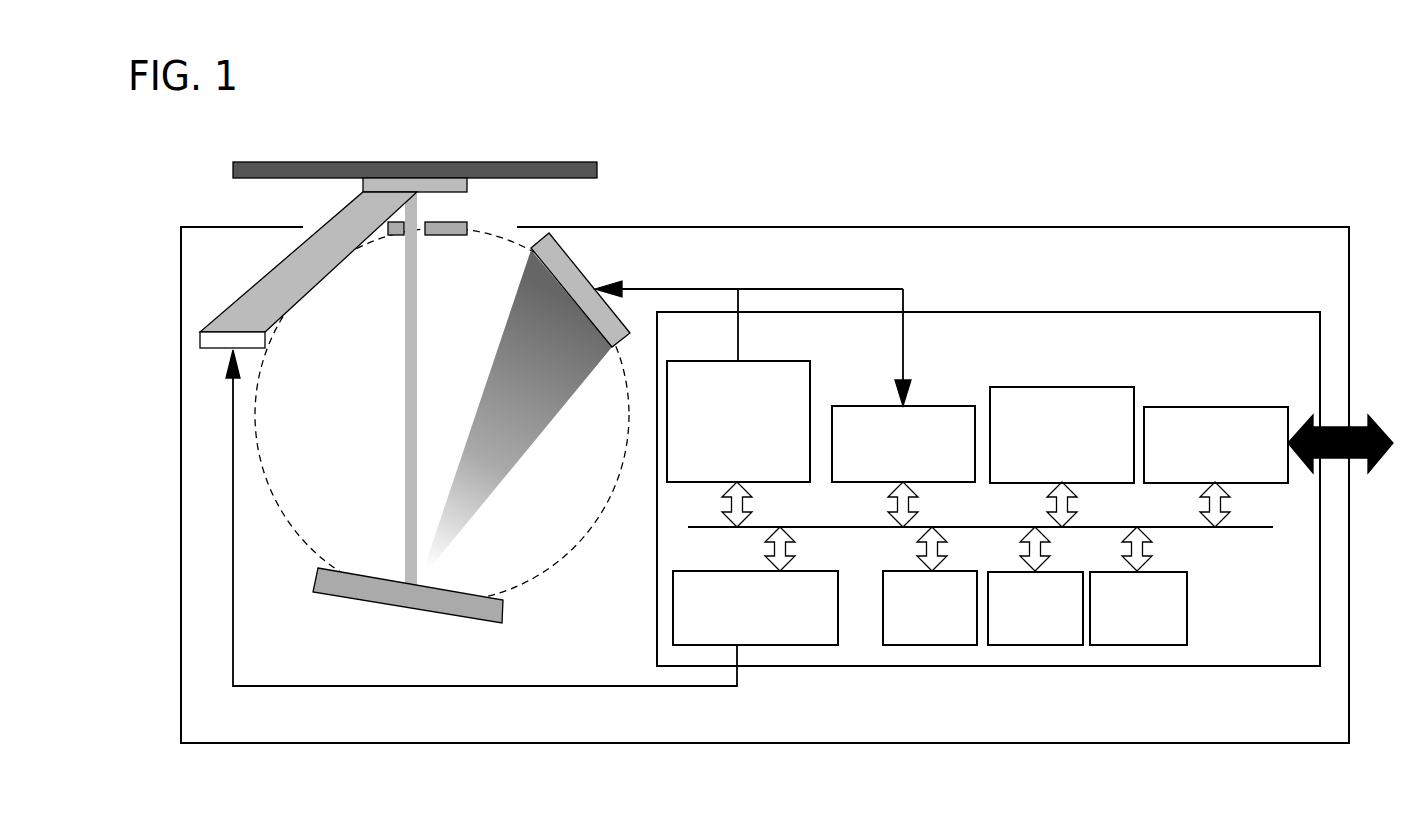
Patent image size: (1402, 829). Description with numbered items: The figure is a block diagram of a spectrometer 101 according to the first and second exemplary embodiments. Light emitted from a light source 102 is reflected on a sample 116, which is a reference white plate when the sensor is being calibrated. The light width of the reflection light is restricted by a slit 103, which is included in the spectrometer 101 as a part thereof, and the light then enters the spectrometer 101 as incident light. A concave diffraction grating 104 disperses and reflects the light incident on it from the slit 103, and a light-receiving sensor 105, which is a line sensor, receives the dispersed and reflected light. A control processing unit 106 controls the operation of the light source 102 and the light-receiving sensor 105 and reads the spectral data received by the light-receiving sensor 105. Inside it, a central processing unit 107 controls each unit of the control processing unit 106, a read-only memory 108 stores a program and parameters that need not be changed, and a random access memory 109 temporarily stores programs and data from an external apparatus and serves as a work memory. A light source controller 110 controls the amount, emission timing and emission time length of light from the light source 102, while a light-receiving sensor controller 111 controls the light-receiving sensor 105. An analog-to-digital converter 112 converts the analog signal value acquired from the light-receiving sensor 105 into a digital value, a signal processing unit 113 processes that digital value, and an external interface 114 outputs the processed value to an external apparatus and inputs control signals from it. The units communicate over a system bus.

The spectrometer 101 is at (1208, 227).
The light source 102 is at (203, 346).
The slit 103 is at (395, 237).
The concave diffraction grating 104 is at (342, 597).
The light-receiving sensor 105 is at (580, 271).
The control processing unit 106 is at (1260, 668).
The central processing unit (CPU) 107 is at (930, 645).
The read-only memory (ROM) 108 is at (1028, 645).
The random access memory (RAM) 109 is at (1135, 645).
The light source controller 110 is at (787, 645).
The light-receiving sensor controller 111 is at (797, 361).
The analog-to-digital (A/D) converter 112 is at (940, 403).
The signal processing unit 113 is at (1086, 387).
The external interface (I/F) 114 is at (1242, 407).
The sample 116 is at (468, 162).